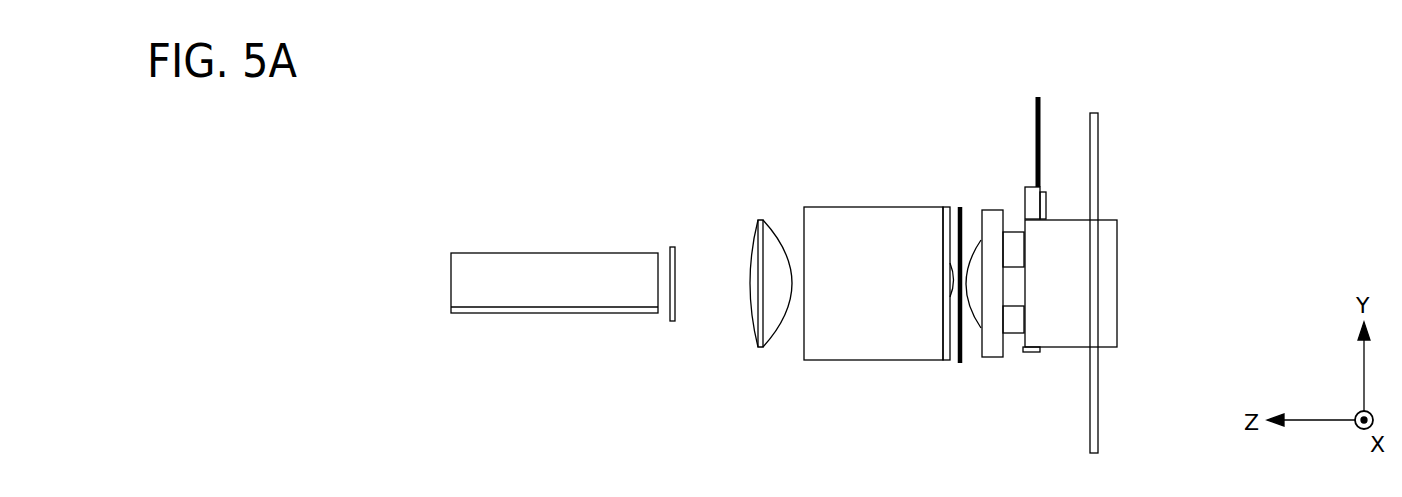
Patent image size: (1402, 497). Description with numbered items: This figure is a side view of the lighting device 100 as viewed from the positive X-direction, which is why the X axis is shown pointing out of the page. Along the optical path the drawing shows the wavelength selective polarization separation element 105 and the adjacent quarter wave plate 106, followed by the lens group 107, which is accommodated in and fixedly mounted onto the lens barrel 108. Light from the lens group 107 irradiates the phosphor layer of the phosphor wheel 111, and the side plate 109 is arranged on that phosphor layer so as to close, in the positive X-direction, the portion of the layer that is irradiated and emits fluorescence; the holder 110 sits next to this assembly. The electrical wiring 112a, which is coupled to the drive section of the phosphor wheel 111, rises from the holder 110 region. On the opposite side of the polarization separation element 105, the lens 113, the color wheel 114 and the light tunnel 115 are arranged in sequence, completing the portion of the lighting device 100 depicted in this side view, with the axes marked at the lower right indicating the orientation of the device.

The lighting device 100 is at (446, 126).
The wavelength selective polarization separation element 105 is at (845, 227).
The quarter wave plate 106 is at (957, 363).
The lens group 107 is at (973, 267).
The lens barrel 108 is at (1013, 240).
The side plate 109 is at (1100, 267).
The holder 110 is at (1032, 188).
The phosphor wheel 111 is at (1098, 138).
The electrical wiring 112a is at (1037, 97).
The lens 113 is at (755, 220).
The color wheel 114 is at (669, 247).
The light tunnel 115 is at (510, 267).